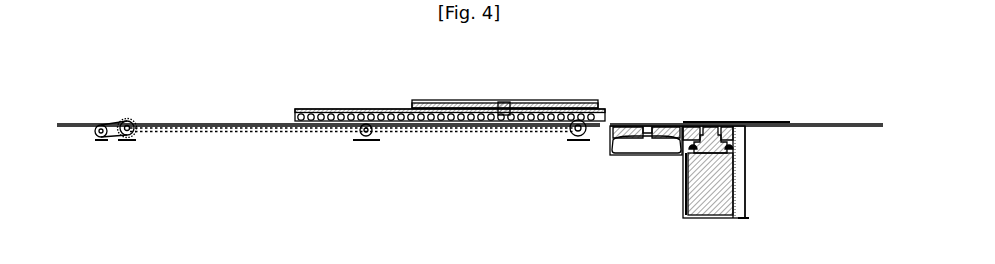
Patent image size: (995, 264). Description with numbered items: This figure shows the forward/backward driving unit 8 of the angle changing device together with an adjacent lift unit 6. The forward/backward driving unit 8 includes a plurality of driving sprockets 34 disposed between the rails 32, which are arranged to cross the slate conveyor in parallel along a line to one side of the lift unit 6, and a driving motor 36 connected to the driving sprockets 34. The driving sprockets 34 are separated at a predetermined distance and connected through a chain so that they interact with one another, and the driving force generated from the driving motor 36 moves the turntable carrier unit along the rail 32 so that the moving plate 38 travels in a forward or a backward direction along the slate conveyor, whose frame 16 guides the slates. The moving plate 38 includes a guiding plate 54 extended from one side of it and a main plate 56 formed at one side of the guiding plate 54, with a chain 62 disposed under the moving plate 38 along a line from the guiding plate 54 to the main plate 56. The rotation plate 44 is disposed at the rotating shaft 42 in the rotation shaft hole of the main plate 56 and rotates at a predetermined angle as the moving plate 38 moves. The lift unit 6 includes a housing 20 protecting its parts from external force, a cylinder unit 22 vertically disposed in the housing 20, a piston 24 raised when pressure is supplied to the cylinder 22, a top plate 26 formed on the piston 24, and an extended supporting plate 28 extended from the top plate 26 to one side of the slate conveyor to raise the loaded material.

The lift unit 6 is at (748, 166).
The forward/backward driving unit 8 is at (103, 161).
The frame 16 is at (646, 138).
The housing 20 is at (746, 155).
The cylinder unit 22 is at (740, 193).
The piston 24 is at (709, 127).
The top plate 26 is at (726, 125).
The extended supporting plate 28 is at (668, 122).
The rails 32 is at (72, 122).
The driving sprockets 34 is at (128, 143).
The driving motor 36 is at (97, 133).
The moving plate 38 is at (450, 76).
The rotating shaft 42 is at (505, 102).
The rotation plate 44 is at (562, 101).
The guiding plate 54 is at (346, 109).
The main plate 56 is at (483, 89).
The chain 62 is at (302, 109).